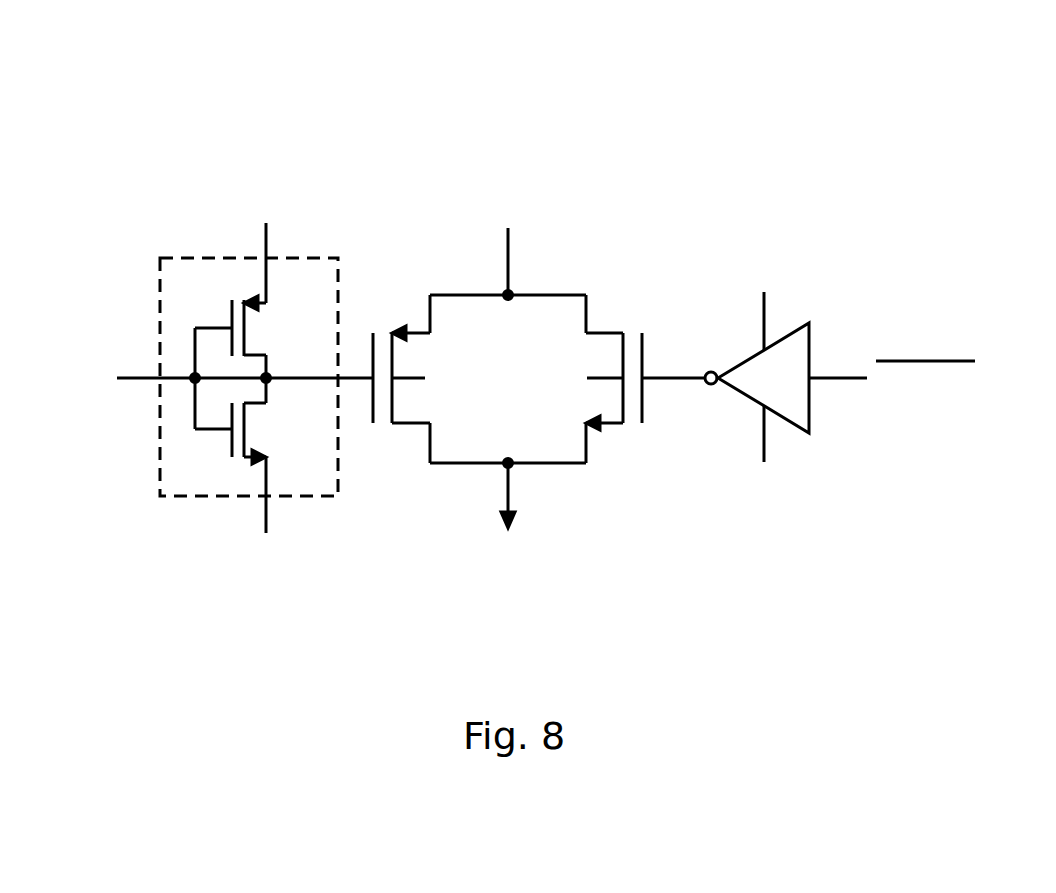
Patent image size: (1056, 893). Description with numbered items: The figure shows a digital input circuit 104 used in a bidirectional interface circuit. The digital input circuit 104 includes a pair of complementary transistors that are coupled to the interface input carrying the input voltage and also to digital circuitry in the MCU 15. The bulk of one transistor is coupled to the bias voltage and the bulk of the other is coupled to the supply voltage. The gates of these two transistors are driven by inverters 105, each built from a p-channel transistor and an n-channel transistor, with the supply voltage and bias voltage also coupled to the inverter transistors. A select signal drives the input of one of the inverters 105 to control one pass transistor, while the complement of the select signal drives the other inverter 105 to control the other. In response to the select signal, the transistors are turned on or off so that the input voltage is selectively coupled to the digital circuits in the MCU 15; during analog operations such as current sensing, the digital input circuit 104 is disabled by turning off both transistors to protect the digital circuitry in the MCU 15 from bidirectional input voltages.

The digital input circuit 104 is at (940, 114).
The inverters 105 is at (291, 257).
The MCU 15 is at (508, 554).